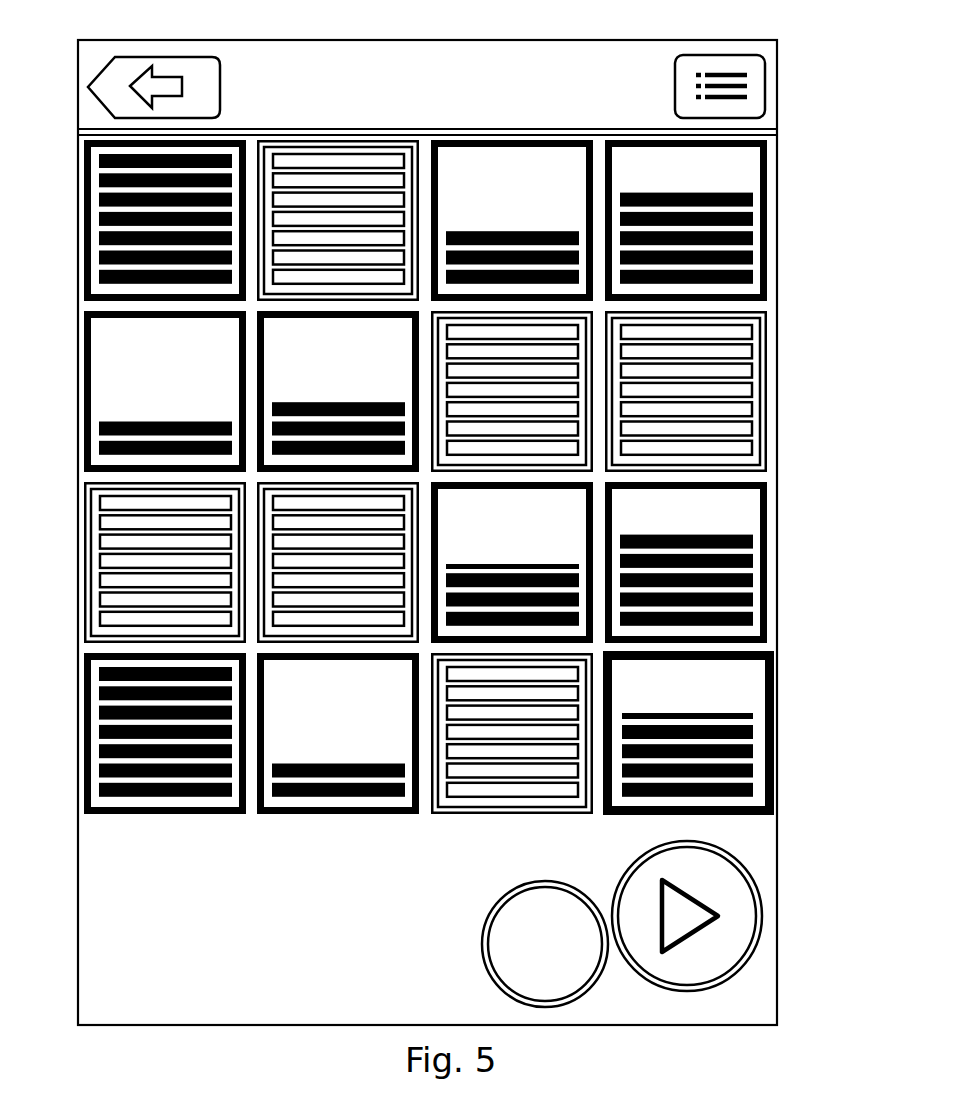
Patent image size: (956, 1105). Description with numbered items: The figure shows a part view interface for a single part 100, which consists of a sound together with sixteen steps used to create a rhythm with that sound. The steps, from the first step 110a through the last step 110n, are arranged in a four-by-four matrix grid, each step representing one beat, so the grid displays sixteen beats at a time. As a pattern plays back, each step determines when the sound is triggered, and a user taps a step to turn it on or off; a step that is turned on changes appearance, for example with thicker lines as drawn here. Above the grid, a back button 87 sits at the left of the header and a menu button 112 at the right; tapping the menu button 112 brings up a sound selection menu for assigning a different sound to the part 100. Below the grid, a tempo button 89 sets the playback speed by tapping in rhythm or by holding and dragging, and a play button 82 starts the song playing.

The part 100 is at (412, 21).
The back button 87 is at (148, 56).
The menu button 112 is at (710, 56).
The step 110a is at (78, 227).
The step 110n is at (753, 722).
The tempo button 89 is at (585, 993).
The play button 82 is at (690, 989).